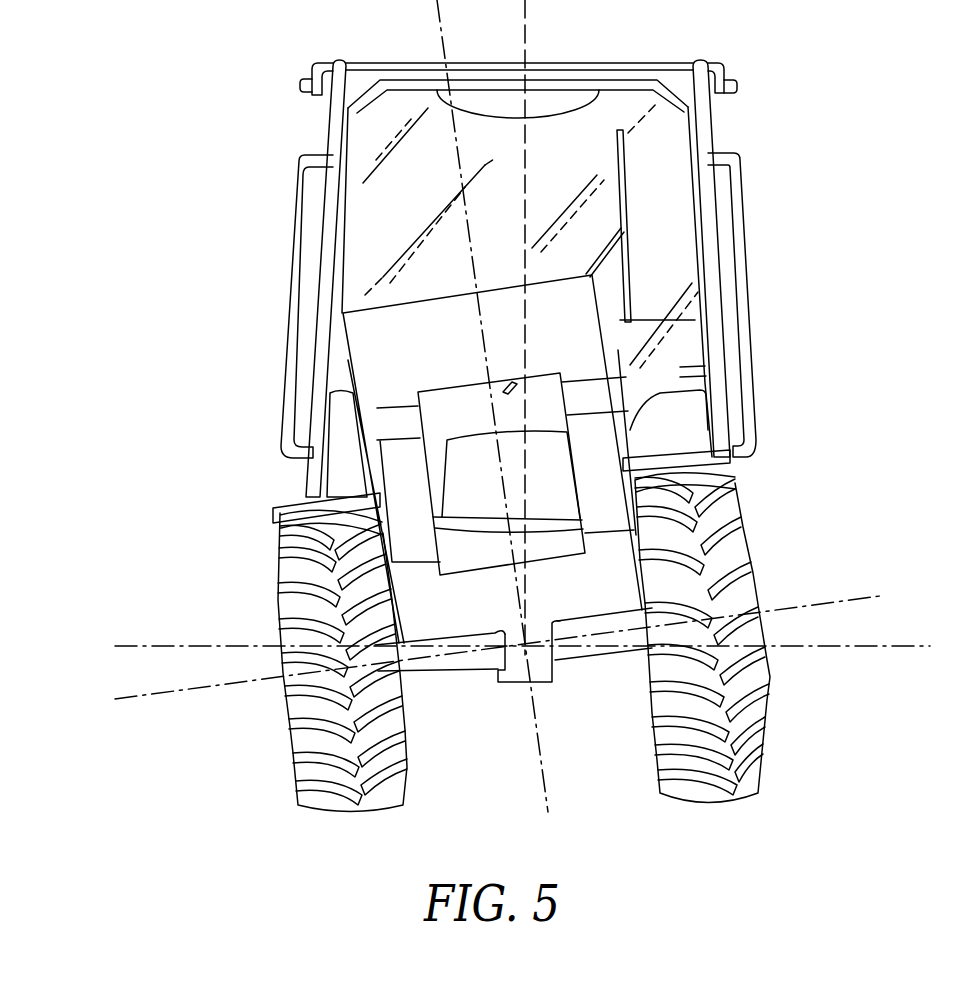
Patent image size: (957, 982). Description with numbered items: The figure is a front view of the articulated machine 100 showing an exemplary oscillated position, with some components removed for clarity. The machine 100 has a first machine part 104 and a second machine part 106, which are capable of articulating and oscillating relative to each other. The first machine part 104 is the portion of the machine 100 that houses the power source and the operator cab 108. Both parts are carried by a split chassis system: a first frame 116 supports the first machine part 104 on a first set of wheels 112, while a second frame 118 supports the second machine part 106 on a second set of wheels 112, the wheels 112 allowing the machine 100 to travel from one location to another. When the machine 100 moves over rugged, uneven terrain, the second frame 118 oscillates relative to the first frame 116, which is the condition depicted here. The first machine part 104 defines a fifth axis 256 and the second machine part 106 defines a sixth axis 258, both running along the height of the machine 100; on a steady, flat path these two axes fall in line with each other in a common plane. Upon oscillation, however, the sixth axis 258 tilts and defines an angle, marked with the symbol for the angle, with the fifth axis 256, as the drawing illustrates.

The machine 100 is at (533, 406).
The first machine part 104 is at (710, 122).
The second machine part 106 is at (348, 322).
The operator cab 108 is at (330, 106).
The wheels 112 is at (753, 542).
The first frame 116 is at (604, 655).
The second frame 118 is at (488, 677).
The fifth axis 256 is at (527, 28).
The sixth axis 258 is at (438, 30).